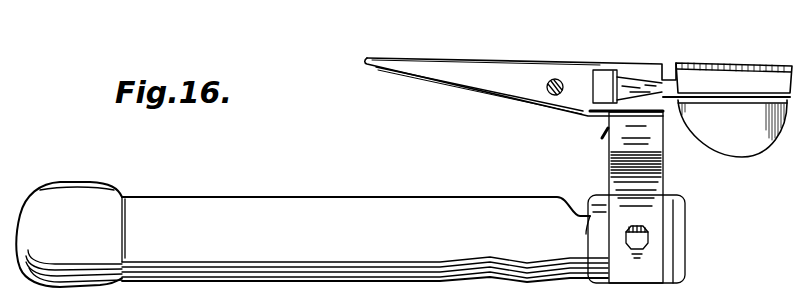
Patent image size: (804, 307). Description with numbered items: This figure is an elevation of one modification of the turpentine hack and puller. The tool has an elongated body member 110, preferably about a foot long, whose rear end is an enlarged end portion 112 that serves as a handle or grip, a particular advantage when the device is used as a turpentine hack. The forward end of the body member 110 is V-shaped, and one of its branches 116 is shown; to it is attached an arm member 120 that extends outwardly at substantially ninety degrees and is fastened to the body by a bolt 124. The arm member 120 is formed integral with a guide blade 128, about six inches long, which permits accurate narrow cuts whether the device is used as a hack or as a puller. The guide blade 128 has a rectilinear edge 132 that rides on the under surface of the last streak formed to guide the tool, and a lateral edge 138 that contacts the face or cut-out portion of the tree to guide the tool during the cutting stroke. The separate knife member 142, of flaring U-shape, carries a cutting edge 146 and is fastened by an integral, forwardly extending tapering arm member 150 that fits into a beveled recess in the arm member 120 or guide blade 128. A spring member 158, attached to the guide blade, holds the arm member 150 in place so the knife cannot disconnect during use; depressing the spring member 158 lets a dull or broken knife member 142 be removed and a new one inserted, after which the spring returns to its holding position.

The body member 110 is at (292, 196).
The enlarged end portion 112 is at (72, 187).
The branch 116 is at (679, 221).
The arm member 120 is at (611, 167).
The bolt 124 is at (640, 237).
The guide blade 128 is at (477, 86).
The rectilinear edge 132 is at (484, 60).
The lateral edge 138 is at (523, 77).
The knife member 142 is at (752, 140).
The cutting edge 146 is at (675, 68).
The arm member 150 is at (636, 83).
The spring member 158 is at (607, 78).